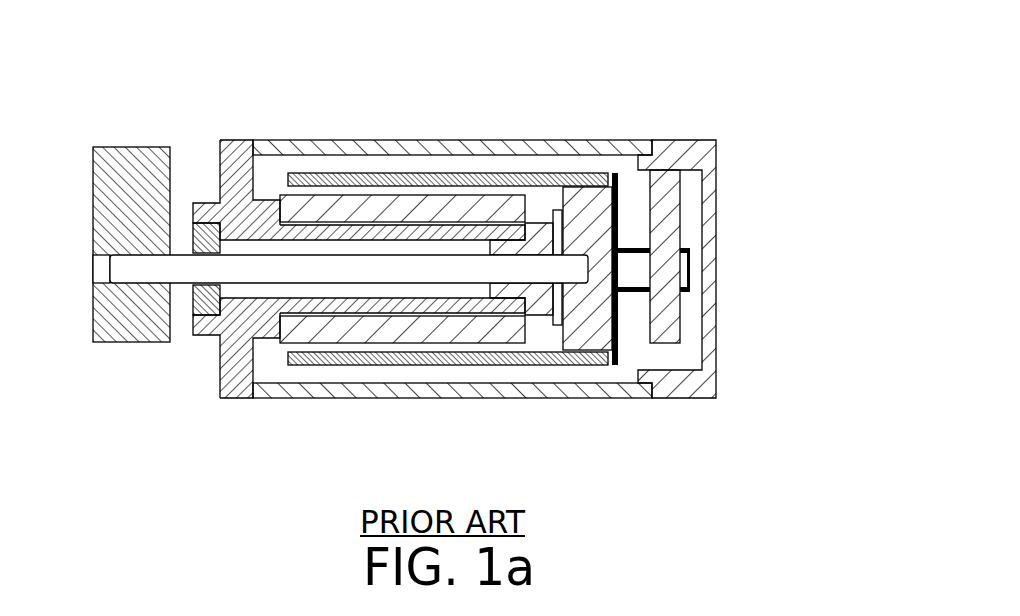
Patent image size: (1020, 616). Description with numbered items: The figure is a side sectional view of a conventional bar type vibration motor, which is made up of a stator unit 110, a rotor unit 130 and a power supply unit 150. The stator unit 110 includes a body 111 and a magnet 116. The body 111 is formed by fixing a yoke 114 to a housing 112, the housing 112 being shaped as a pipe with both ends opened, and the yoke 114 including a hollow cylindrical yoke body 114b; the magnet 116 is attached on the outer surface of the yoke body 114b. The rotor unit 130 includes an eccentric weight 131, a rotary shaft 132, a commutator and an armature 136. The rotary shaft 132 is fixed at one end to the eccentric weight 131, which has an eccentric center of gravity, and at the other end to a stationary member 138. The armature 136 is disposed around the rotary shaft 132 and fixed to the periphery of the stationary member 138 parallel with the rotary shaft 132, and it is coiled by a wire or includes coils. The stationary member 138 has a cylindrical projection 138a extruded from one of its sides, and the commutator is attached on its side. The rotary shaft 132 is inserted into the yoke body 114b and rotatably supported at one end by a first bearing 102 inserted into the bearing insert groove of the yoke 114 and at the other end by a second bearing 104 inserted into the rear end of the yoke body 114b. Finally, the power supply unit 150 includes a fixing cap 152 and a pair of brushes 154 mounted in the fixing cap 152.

The first bearing 102 is at (248, 272).
The second bearing 104 is at (540, 306).
The stator unit 110 is at (405, 247).
The body 111 is at (405, 262).
The housing 112 is at (262, 141).
The yoke 114 is at (208, 174).
The yoke body 114b is at (443, 313).
The magnet 116 is at (450, 205).
The rotor unit 130 is at (683, 265).
The eccentric weight 131 is at (108, 197).
The rotary shaft 132 is at (199, 312).
The armature 136 is at (507, 172).
The stationary member 138 is at (597, 348).
The cylindrical projection 138a is at (691, 279).
The power supply unit 150 is at (730, 227).
The fixing cap 152 is at (705, 210).
The brushes 154 is at (681, 230).